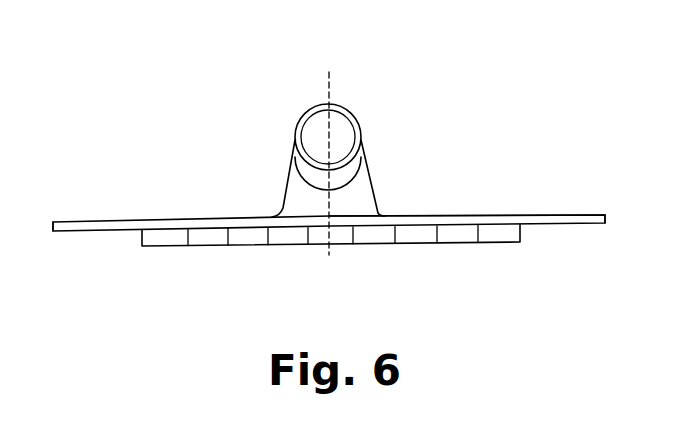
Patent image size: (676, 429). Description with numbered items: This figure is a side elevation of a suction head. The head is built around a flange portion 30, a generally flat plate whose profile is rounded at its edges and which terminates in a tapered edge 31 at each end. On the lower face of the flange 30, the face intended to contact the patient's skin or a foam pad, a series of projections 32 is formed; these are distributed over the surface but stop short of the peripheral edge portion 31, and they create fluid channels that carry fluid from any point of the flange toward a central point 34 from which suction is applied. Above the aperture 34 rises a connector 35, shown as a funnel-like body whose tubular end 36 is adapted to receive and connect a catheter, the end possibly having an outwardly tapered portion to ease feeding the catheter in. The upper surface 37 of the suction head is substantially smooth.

The flange portion 30 is at (503, 208).
The tapered edge 31 is at (100, 227).
The projections 32 is at (287, 235).
The central point 34 is at (326, 213).
The connector 35 is at (290, 177).
The tubular end 36 is at (347, 113).
The upper surface 37 is at (437, 217).